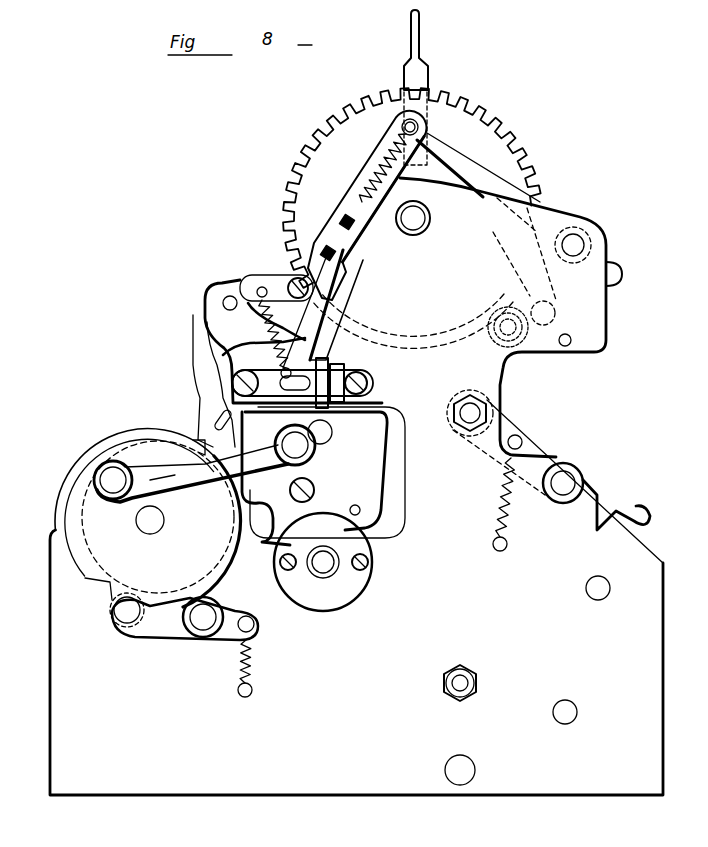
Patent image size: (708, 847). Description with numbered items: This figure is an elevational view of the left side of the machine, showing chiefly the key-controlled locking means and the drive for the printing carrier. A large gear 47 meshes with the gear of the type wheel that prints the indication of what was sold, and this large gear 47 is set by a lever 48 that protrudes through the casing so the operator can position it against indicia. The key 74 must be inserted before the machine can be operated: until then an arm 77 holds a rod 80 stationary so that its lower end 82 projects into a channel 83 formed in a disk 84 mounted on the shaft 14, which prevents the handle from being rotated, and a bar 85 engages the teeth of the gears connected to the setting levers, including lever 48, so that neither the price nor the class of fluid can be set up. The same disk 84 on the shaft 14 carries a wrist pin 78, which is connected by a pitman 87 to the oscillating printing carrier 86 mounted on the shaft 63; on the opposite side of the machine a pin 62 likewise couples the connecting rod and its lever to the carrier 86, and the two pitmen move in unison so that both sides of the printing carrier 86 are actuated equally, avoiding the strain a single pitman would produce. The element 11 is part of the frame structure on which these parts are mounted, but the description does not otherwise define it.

The frame plate 11 is at (418, 217).
The shaft 14 is at (148, 519).
The large gear 47 is at (445, 115).
The lever 48 is at (425, 74).
The pin 62 is at (297, 443).
The rod 63 is at (325, 565).
The key 74 is at (328, 382).
The arm 77 is at (357, 271).
The wrist pin 78 is at (113, 478).
The rod 80 is at (335, 233).
The lower end of rod 82 is at (200, 446).
The channel 83 is at (187, 457).
The disk 84 is at (97, 527).
The bar 85 is at (512, 335).
The oscillating printing carrier 86 is at (365, 468).
The pitman 87 is at (163, 470).